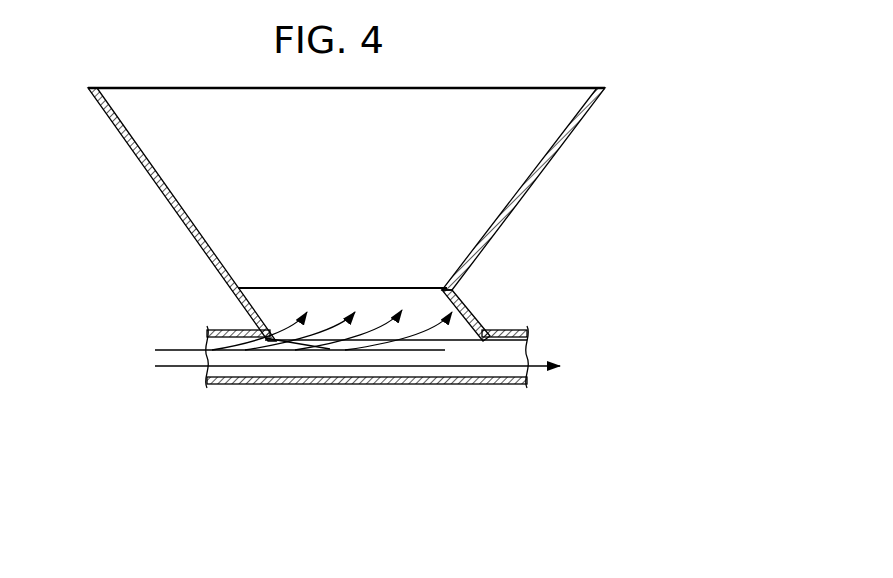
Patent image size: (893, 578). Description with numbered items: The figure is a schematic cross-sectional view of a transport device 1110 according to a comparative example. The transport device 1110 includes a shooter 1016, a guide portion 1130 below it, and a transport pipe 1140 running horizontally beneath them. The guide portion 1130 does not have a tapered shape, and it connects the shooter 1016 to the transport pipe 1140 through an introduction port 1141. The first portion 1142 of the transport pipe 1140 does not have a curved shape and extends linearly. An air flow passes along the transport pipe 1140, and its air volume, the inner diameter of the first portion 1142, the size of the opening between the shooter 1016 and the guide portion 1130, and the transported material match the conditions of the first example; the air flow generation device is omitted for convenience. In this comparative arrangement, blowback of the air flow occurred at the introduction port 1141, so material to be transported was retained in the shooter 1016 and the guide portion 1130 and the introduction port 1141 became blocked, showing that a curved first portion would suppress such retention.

The shooter 1016 is at (218, 210).
The transport device 1110 is at (495, 277).
The guide portion 1130 is at (273, 315).
The transport pipe 1140 is at (396, 369).
The introduction port 1141 is at (405, 341).
The first portion 1142 is at (336, 385).